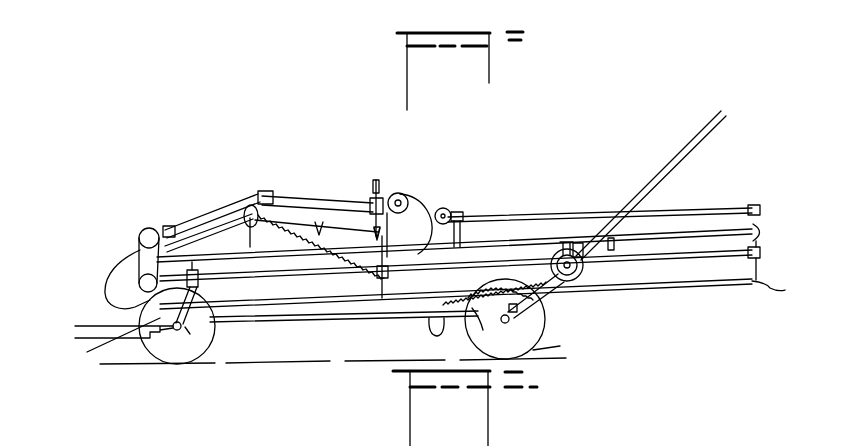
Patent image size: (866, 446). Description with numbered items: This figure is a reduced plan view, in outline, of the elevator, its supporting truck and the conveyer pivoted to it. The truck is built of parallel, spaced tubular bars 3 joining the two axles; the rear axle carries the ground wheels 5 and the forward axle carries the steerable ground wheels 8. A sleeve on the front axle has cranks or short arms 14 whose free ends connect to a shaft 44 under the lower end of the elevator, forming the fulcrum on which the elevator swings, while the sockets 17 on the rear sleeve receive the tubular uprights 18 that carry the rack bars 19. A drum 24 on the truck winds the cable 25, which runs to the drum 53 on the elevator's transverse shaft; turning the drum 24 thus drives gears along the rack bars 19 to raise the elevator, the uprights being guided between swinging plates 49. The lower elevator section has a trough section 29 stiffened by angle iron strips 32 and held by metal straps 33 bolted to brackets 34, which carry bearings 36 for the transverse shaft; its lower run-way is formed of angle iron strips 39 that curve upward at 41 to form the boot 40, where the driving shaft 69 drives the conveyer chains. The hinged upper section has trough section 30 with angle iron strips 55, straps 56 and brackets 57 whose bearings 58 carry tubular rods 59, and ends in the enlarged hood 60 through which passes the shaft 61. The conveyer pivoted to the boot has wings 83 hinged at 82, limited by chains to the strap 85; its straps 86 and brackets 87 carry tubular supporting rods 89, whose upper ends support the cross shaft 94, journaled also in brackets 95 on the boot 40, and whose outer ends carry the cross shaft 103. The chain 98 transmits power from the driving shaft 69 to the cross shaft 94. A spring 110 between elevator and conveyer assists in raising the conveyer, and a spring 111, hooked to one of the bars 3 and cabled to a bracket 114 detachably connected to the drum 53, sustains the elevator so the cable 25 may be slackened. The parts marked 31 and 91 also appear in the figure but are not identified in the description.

The tubular bars 3 is at (264, 323).
The ground wheels 5 is at (548, 337).
The ground wheels 8 is at (135, 343).
The cranks or short arms 14 is at (177, 325).
The tubular studs or sockets 17 is at (509, 325).
The tubular uprights 18 is at (540, 303).
The rack bars 19 is at (699, 139).
The drum 24 is at (440, 332).
The cable 25 is at (483, 329).
The trough section 29 is at (460, 263).
The trough section 30 is at (454, 240).
The end fitting 31 is at (762, 231).
The angle iron strips 32 is at (712, 233).
The metal straps 33 is at (386, 278).
The brackets 34 is at (376, 281).
The bearings 36 is at (282, 285).
The angle iron strips 39 is at (322, 307).
The boot 40 is at (137, 262).
The upward curve of angle iron strips 41 is at (122, 298).
The shaft 44 is at (206, 273).
The plates 49 is at (583, 290).
The drum 53 is at (505, 240).
The angle iron strips 55 is at (562, 247).
The metal straps 56 is at (462, 213).
The brackets 57 is at (757, 207).
The bearings 58 is at (584, 257).
The tubular rods 59 is at (712, 197).
The hood 60 is at (410, 225).
The shaft 61 is at (447, 207).
The driving shaft 69 is at (107, 339).
The hinges 82 is at (317, 218).
The wings 83 is at (256, 194).
The strap 85 is at (211, 229).
The straps 86 is at (212, 217).
The brackets 87 is at (163, 226).
The tubular supporting rods 89 is at (187, 229).
The rod 91 is at (368, 196).
The cross shaft 94 is at (143, 230).
The brackets 95 is at (362, 202).
The chain 98 is at (140, 252).
The cross shaft 103 is at (412, 181).
The spring 110 is at (309, 245).
The spring 111 is at (489, 290).
The bracket 114 is at (576, 244).